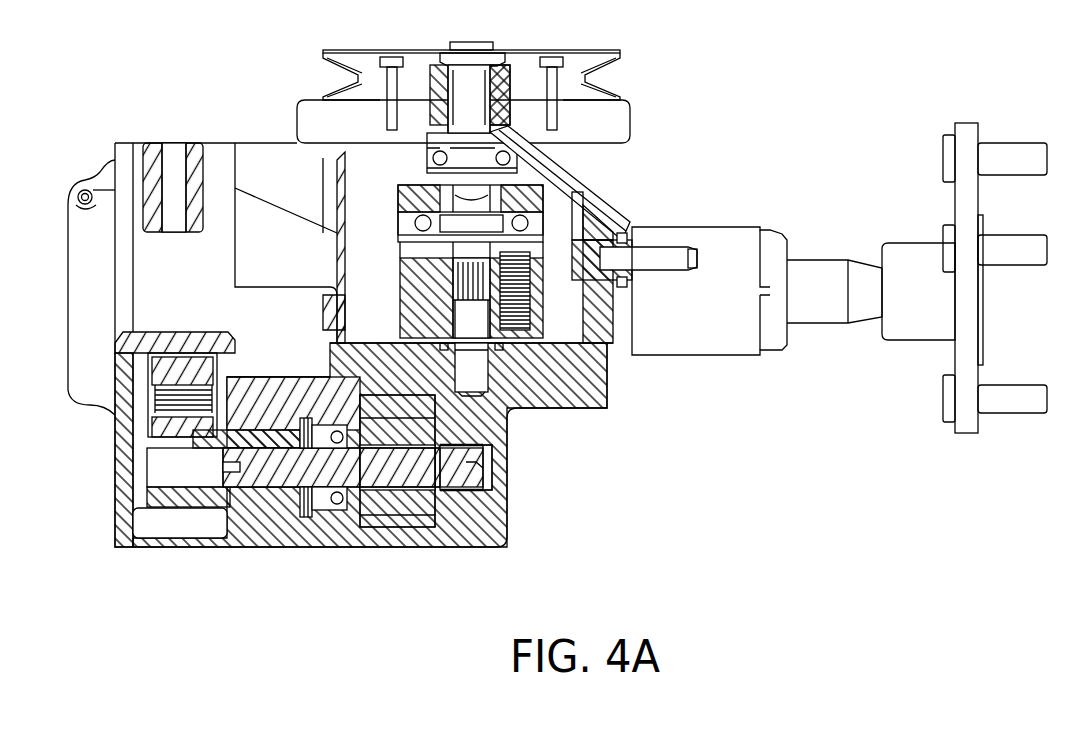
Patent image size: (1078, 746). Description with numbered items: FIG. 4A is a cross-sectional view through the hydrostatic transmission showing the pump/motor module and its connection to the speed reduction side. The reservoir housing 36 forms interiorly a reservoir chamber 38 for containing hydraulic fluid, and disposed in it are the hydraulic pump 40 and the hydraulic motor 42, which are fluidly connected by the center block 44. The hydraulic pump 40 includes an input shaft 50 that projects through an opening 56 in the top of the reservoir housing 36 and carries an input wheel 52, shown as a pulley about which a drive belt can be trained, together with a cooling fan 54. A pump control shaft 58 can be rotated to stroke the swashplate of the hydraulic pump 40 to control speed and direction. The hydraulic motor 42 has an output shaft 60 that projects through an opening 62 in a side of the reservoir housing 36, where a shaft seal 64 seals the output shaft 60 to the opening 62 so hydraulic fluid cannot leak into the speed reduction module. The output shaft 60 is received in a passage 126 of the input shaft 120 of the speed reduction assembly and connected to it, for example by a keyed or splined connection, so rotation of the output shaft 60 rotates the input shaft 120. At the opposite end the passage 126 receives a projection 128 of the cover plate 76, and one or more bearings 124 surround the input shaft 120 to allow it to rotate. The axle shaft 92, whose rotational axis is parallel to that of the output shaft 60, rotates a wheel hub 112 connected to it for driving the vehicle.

The reservoir housing 36 is at (603, 208).
The reservoir chamber 38 is at (572, 330).
The hydraulic pump 40 is at (407, 272).
The hydraulic motor 42 is at (432, 503).
The center block 44 is at (492, 467).
The input shaft 50 is at (582, 167).
The input wheel 52 is at (612, 52).
The cooling fan 54 is at (630, 113).
The opening 56 is at (405, 127).
The pump control shaft 58 is at (632, 247).
The output shaft 60 is at (283, 472).
The opening 62 is at (320, 515).
The shaft seal 64 is at (312, 510).
The cover plate 76 is at (115, 450).
The axle shaft 92 is at (833, 257).
The wheel hub 112 is at (969, 123).
The input shaft 120 is at (203, 490).
The bearings 124 is at (252, 507).
The passage 126 is at (205, 468).
The projection 128 is at (167, 480).